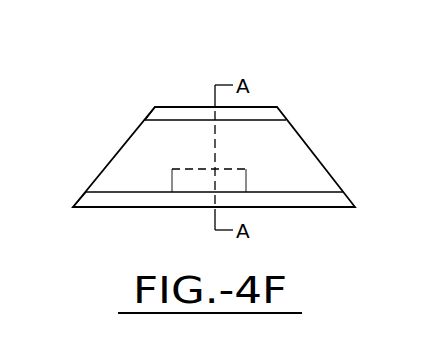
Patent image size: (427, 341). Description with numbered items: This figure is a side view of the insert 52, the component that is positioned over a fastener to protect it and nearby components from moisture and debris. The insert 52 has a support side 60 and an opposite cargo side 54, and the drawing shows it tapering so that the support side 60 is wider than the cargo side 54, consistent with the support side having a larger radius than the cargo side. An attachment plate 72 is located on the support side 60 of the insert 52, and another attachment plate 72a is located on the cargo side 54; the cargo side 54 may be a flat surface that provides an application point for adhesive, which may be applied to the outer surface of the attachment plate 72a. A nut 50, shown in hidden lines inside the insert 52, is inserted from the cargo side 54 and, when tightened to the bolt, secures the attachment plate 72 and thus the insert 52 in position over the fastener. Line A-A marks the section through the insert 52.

The nut 50 is at (190, 182).
The insert 52 is at (351, 144).
The cargo side 54 is at (269, 100).
The support side 60 is at (328, 216).
The attachment plate 72 is at (92, 202).
The attachment plate 72a is at (163, 111).